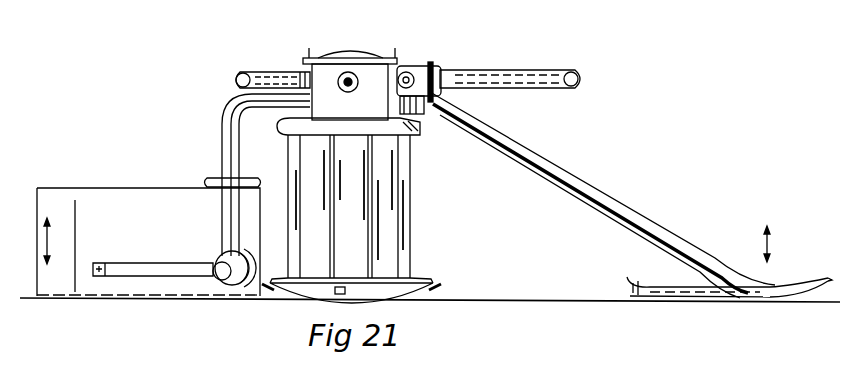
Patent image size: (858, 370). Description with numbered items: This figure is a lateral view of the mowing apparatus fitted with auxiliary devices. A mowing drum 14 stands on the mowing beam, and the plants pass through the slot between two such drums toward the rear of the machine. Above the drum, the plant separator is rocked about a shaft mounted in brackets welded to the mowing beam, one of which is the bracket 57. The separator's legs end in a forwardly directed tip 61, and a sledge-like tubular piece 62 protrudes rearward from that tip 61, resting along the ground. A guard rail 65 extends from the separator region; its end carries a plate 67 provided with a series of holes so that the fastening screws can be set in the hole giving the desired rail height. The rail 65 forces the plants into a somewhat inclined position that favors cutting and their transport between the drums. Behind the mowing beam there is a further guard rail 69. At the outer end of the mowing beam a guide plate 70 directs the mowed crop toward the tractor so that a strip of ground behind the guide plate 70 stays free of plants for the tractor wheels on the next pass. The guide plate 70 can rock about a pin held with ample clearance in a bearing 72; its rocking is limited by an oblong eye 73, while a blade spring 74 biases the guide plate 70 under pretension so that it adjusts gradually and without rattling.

The drum 14 is at (392, 184).
The bracket 57 is at (401, 64).
The forwardly directed tip 61 is at (811, 287).
The sledge-like tubular piece 62 is at (628, 282).
The guard rail 65 is at (545, 70).
The plate 67 is at (421, 64).
The guard rail 69 is at (259, 72).
The guide plate 70 is at (121, 200).
The bearing 72 is at (224, 294).
The oblong eye 73 is at (203, 178).
The blade spring 74 is at (157, 266).